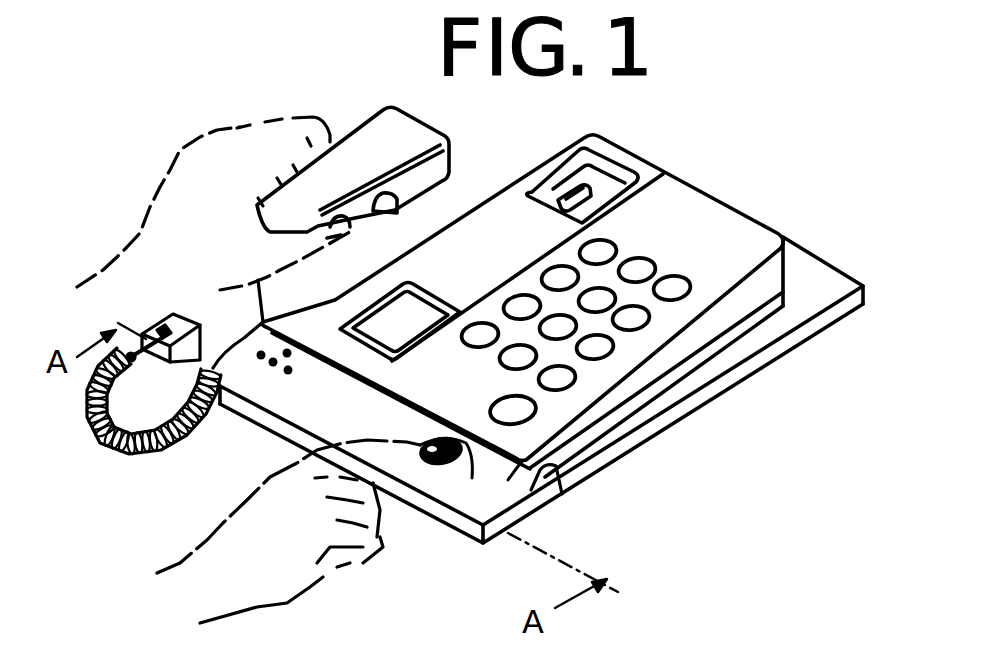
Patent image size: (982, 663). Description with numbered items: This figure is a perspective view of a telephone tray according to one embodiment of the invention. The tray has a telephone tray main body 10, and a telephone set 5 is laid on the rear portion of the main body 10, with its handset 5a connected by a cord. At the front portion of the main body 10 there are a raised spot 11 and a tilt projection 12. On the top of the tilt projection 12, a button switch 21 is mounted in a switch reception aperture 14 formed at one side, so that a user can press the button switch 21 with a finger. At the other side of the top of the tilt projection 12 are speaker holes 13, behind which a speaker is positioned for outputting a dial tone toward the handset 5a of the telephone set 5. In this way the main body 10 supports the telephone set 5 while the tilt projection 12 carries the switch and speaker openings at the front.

The telephone set 5 is at (722, 190).
The handset 5a is at (213, 367).
The telephone tray main body 10 is at (784, 314).
The raised spot 11 is at (562, 494).
The tilt projection 12 is at (490, 467).
The speaker holes 13 is at (268, 373).
The switch reception aperture 14 is at (468, 455).
The button switch 21 is at (434, 468).